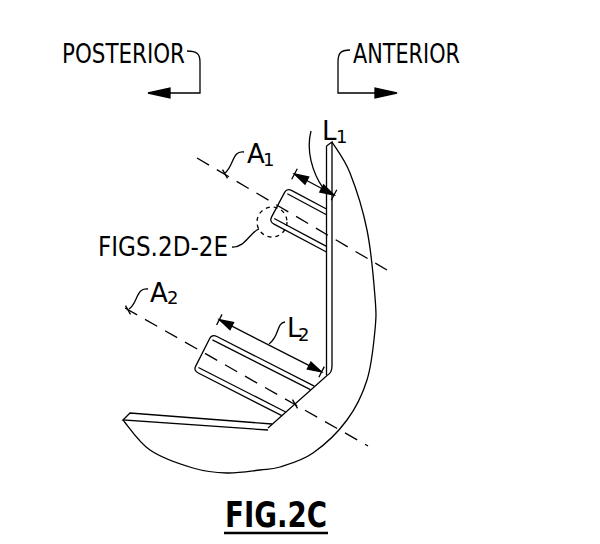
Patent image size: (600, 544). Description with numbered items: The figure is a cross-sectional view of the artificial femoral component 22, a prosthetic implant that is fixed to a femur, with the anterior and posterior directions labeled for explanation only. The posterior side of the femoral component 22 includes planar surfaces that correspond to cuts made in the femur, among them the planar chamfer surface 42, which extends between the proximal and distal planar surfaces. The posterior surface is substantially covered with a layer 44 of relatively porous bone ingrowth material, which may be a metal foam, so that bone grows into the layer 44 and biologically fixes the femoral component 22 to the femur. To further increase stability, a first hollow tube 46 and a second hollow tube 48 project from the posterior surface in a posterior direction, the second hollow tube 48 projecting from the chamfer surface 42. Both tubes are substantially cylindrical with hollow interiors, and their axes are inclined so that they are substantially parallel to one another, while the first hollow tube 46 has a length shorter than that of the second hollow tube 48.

The artificial femoral component 22 is at (196, 221).
The planar chamfer surface 42 is at (252, 413).
The layer of bone ingrowth material 44 is at (327, 313).
The first hollow tube 46 is at (290, 253).
The second hollow tube 48 is at (185, 377).